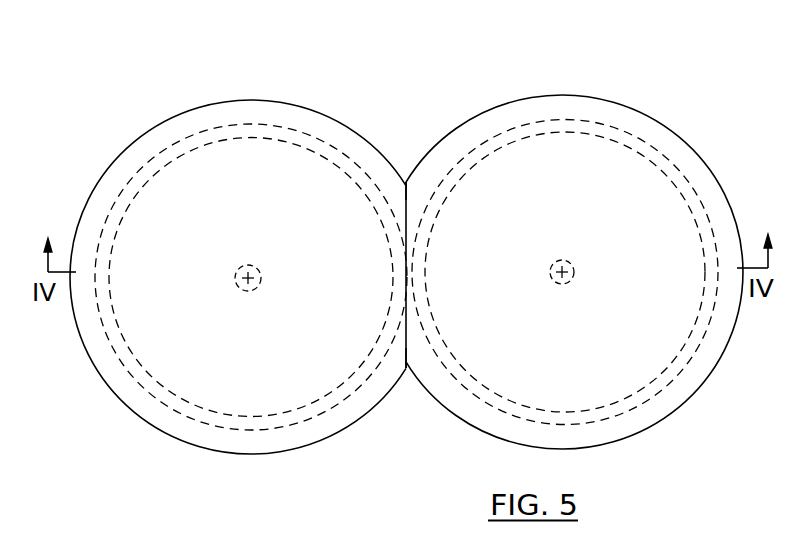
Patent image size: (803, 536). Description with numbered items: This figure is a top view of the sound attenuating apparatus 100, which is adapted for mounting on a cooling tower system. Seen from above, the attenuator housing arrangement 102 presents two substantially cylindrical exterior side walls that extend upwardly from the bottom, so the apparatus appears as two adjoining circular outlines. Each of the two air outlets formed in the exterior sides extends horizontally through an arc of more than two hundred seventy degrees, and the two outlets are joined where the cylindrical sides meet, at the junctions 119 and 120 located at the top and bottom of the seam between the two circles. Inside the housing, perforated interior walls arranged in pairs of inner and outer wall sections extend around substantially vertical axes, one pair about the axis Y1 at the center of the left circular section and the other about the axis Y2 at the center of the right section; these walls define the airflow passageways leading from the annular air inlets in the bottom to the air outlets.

The sound attenuating apparatus 100 is at (406, 243).
The attenuator housing arrangement 102 is at (525, 112).
The junction of air outlets 119 is at (404, 178).
The junction of air outlets 120 is at (407, 371).
The vertical axis Y1 is at (256, 272).
The vertical axis Y2 is at (570, 267).